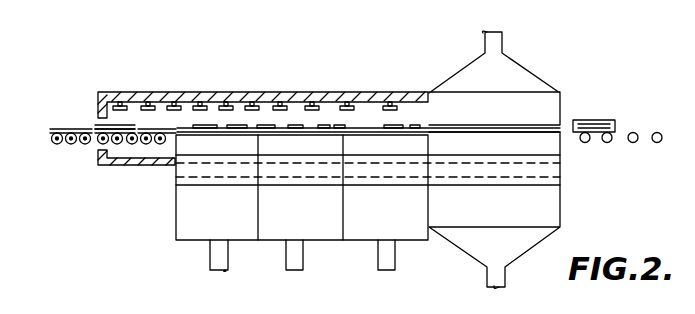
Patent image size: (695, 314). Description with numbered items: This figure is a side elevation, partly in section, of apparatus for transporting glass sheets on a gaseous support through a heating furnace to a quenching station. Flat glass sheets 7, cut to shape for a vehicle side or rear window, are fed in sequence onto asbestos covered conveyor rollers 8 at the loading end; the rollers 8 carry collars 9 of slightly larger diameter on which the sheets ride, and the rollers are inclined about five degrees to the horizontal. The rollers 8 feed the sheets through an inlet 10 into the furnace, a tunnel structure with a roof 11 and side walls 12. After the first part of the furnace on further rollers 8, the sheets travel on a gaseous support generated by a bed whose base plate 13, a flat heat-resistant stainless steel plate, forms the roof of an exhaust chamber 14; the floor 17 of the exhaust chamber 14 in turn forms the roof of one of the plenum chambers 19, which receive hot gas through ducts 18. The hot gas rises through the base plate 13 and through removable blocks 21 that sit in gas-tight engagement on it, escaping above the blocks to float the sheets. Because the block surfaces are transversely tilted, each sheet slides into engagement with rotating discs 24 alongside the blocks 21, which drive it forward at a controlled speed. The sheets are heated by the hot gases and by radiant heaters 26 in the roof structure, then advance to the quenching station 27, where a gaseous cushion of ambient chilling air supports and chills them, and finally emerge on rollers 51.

The glass sheet 7 is at (57, 128).
The conveyor rollers 8 is at (83, 143).
The collars 9 is at (118, 146).
The inlet 10 is at (97, 125).
The roof 11 is at (225, 105).
The side walls 12 is at (185, 101).
The base plate 13 is at (175, 190).
The exhaust chamber 14 is at (248, 163).
The floor 17 is at (422, 182).
The ducts 18 is at (227, 270).
The plenum chambers 19 is at (203, 234).
The removable blocks 21 is at (170, 156).
The rotating discs 24 is at (233, 134).
The heaters 26 is at (321, 109).
The quenching station 27 is at (516, 70).
The rollers 51 is at (653, 142).